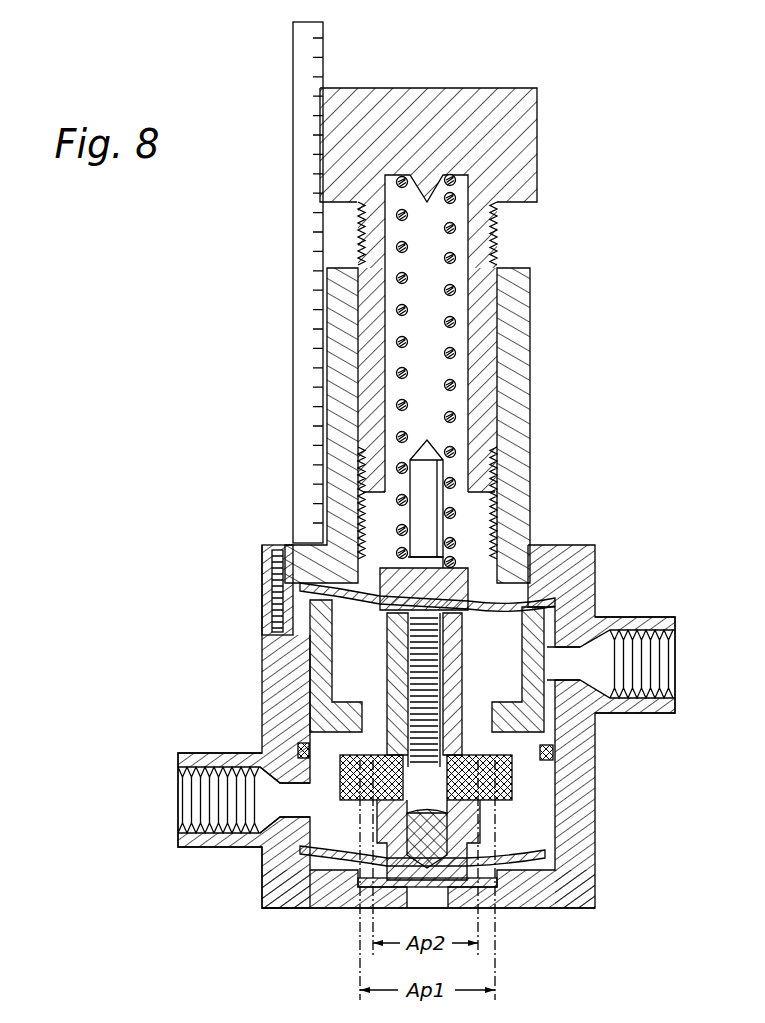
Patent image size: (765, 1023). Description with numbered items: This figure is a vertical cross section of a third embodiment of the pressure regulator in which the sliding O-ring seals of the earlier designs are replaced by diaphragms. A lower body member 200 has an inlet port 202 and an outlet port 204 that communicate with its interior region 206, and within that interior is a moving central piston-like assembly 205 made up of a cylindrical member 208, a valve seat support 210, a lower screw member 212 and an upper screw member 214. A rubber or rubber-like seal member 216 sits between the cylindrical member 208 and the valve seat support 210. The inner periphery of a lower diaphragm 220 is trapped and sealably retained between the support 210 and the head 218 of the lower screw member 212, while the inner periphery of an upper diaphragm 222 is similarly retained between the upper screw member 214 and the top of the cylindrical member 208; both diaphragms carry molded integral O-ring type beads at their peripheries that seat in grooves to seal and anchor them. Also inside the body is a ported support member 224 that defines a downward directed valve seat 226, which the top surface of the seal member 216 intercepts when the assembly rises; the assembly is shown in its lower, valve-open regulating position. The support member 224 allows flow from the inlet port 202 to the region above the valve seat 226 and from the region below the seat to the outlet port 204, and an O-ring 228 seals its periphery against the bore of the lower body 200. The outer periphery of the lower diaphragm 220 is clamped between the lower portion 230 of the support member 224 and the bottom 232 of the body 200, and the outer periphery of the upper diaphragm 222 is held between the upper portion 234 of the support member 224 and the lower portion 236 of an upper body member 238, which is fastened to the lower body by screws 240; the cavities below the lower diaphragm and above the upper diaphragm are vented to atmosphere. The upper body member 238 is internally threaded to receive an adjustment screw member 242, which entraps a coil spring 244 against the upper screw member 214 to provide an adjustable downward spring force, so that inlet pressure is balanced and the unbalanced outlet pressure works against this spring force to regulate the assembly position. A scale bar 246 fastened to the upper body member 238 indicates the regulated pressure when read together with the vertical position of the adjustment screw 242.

The lower body member 200 is at (275, 672).
The inlet port 202 is at (640, 617).
The outlet port 204 is at (202, 753).
The piston-like assembly 205 is at (468, 668).
The interior region 206 is at (342, 640).
The cylindrical member 208 is at (397, 652).
The valve seat support 210 is at (392, 822).
The lower screw member 212 is at (410, 880).
The upper screw member 214 is at (470, 572).
The seal member 216 is at (473, 788).
The head 218 is at (437, 888).
The lower diaphragm 220 is at (530, 882).
The upper diaphragm 222 is at (343, 583).
The support member 224 is at (310, 750).
The valve seat 226 is at (497, 750).
The O-ring 228 is at (282, 785).
The lower portion of support member 230 is at (258, 868).
The bottom of the body 232 is at (312, 897).
The upper portion of support member 234 is at (290, 615).
The lower portion of upper body member 236 is at (552, 570).
The upper body member 238 is at (515, 372).
The screws 240 is at (262, 548).
The adjustment screw member 242 is at (523, 153).
The coil spring 244 is at (457, 258).
The scale bar 246 is at (293, 266).